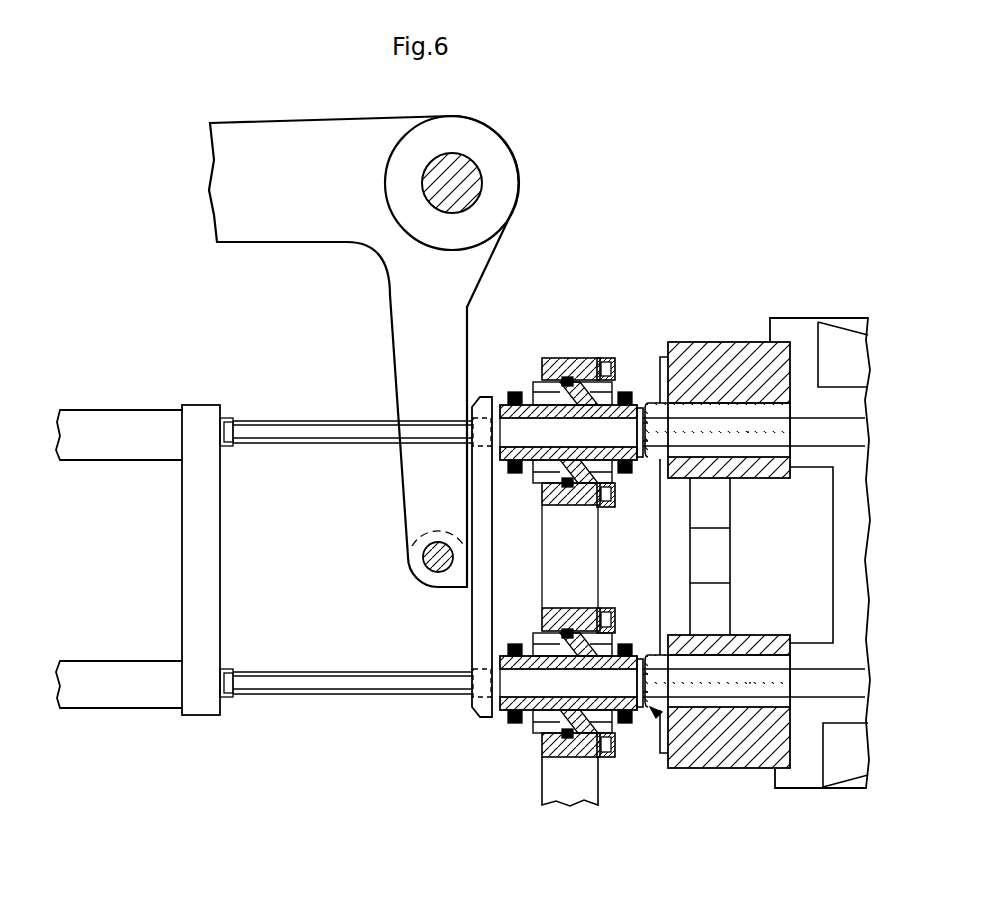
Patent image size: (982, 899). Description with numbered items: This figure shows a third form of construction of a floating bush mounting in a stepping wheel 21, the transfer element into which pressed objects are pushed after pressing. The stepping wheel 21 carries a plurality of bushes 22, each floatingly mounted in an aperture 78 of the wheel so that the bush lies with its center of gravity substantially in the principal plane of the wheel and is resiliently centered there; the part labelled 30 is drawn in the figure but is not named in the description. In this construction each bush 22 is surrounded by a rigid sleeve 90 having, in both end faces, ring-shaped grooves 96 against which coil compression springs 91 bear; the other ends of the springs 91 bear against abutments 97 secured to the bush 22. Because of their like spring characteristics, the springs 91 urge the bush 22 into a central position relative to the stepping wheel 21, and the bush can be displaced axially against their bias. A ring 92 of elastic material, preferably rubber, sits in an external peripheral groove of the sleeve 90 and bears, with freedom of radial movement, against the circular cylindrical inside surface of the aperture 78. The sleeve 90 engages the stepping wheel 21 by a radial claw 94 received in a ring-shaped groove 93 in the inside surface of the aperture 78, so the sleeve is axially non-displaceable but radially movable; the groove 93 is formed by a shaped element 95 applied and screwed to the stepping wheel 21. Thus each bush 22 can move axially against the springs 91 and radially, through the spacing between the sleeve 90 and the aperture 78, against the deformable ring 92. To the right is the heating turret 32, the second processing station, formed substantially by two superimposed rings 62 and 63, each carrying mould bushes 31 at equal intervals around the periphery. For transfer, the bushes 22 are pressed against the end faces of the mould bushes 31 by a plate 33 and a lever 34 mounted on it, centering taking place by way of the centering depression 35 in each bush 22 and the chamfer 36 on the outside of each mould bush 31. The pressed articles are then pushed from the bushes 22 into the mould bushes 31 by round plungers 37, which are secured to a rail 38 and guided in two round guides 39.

The stepping wheel 21 is at (543, 773).
The bush 22 is at (505, 710).
The upper shaft 30 is at (498, 446).
The mould bush 31 is at (653, 712).
The heating turret 32 is at (808, 318).
The plate 33 is at (480, 620).
The lever 34 is at (460, 331).
The centering depression 35 is at (638, 406).
The chamfer 36 is at (655, 460).
The round plunger 37 is at (320, 444).
The rail 38 is at (190, 562).
The round guide 39 is at (110, 410).
The ring 62 is at (722, 356).
The ring 63 is at (720, 758).
The aperture 78 is at (543, 489).
The rigid sleeve 90 is at (537, 636).
The coil compression spring 91 is at (520, 646).
The ring 92 is at (567, 380).
The ring-shaped groove 93 is at (603, 365).
The radial claw 94 is at (606, 499).
The shaped element 95 is at (608, 757).
The ring-shaped groove 96 is at (540, 390).
The abutment 97 is at (508, 395).